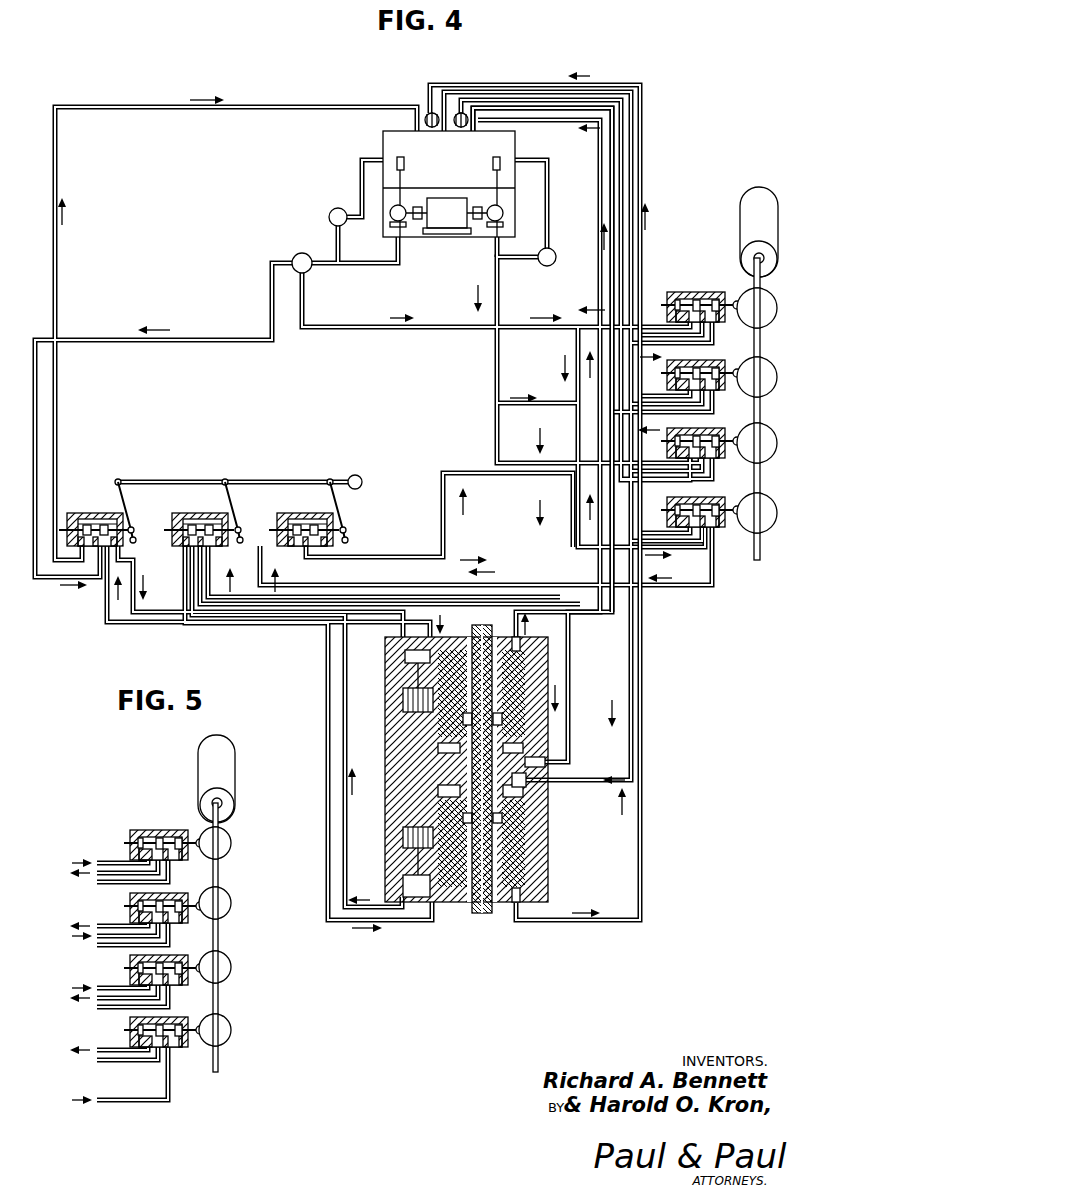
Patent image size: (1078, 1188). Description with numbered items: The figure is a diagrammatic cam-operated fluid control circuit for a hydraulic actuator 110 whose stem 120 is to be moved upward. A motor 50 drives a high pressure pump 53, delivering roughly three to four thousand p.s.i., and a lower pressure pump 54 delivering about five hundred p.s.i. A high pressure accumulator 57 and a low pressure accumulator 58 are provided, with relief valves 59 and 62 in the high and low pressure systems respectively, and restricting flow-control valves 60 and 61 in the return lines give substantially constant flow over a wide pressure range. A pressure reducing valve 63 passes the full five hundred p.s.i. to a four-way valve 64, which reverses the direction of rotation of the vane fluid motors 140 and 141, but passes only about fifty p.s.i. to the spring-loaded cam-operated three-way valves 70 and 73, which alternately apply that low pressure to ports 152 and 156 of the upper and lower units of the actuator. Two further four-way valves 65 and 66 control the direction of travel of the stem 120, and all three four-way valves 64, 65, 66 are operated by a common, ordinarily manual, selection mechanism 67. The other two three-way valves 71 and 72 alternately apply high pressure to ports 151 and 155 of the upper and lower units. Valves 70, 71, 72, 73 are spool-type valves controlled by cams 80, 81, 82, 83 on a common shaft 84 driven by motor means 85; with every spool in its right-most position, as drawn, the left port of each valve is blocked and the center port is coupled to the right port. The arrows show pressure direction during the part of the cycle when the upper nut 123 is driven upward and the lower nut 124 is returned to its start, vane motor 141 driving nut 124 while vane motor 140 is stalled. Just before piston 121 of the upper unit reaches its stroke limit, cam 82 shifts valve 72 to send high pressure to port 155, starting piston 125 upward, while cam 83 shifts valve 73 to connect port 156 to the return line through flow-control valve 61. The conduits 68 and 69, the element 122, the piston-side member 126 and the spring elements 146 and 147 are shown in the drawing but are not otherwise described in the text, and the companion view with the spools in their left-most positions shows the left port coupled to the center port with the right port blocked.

In FIG. 4, the motor 50 is at (446, 216).
In FIG. 4, the high pressure pump 53 is at (503, 210).
In FIG. 4, the lower pressure pump 54 is at (392, 218).
In FIG. 4, the high pressure accumulator 57 is at (496, 157).
In FIG. 4, the low pressure accumulator 58 is at (401, 157).
In FIG. 4, the relief valve 59 is at (556, 253).
In FIG. 4, the restricting flow-control valve 60 is at (430, 113).
In FIG. 4, the restricting flow-control valve 61 is at (461, 113).
In FIG. 4, the relief valve 62 is at (342, 208).
In FIG. 4, the pressure reducing valve 63 is at (310, 270).
In FIG. 4, the 4-way valve 64 is at (93, 513).
In FIG. 4, the 4-way valve 65 is at (208, 513).
In FIG. 4, the 4-way valve 66 is at (312, 513).
In FIG. 4, the common selection mechanism 67 is at (268, 482).
In FIG. 4, the pressure conduit 68 is at (505, 100).
In FIG. 4, the return conduit 69 is at (540, 108).
In FIG. 4, the 3-way cam-operated valve 70 is at (696, 292).
In FIG. 5, the 3-way cam-operated valve 70 is at (162, 848).
In FIG. 4, the 3-way cam-operated valve 71 is at (715, 365).
In FIG. 5, the 3-way cam-operated valve 71 is at (175, 910).
In FIG. 4, the 3-way cam-operated valve 72 is at (712, 432).
In FIG. 5, the 3-way cam-operated valve 72 is at (178, 985).
In FIG. 4, the 3-way cam-operated valve 73 is at (712, 500).
In FIG. 5, the 3-way cam-operated valve 73 is at (178, 1048).
In FIG. 4, the cam 80 is at (775, 312).
In FIG. 5, the cam 80 is at (230, 855).
In FIG. 4, the cam 81 is at (775, 380).
In FIG. 5, the cam 81 is at (229, 905).
In FIG. 4, the cam 82 is at (773, 448).
In FIG. 5, the cam 82 is at (230, 970).
In FIG. 4, the cam 83 is at (770, 515).
In FIG. 5, the cam 83 is at (230, 1035).
In FIG. 4, the common shaft 84 is at (762, 335).
In FIG. 5, the common shaft 84 is at (220, 832).
In FIG. 4, the motor means 85 is at (759, 232).
In FIG. 5, the motor means 85 is at (216, 779).
In FIG. 4, the hydraulic actuator 110 is at (478, 758).
In FIG. 4, the stem 120 is at (482, 913).
In FIG. 4, the piston 121 is at (440, 735).
In FIG. 4, the piston 122 is at (440, 672).
In FIG. 4, the upper nut 123 is at (440, 722).
In FIG. 4, the lower nut 124 is at (525, 805).
In FIG. 4, the piston 125 is at (525, 853).
In FIG. 4, the piston 126 is at (445, 810).
In FIG. 4, the vane fluid motor 140 is at (405, 652).
In FIG. 4, the vane fluid motor 141 is at (403, 878).
In FIG. 4, the spring 146 is at (403, 697).
In FIG. 4, the spring 147 is at (403, 835).
In FIG. 4, the port 151 is at (550, 760).
In FIG. 4, the port 152 is at (520, 645).
In FIG. 4, the port 155 is at (520, 895).
In FIG. 4, the port 156 is at (540, 785).